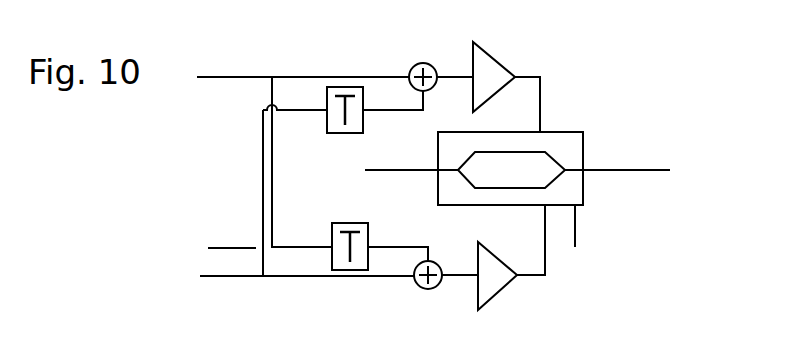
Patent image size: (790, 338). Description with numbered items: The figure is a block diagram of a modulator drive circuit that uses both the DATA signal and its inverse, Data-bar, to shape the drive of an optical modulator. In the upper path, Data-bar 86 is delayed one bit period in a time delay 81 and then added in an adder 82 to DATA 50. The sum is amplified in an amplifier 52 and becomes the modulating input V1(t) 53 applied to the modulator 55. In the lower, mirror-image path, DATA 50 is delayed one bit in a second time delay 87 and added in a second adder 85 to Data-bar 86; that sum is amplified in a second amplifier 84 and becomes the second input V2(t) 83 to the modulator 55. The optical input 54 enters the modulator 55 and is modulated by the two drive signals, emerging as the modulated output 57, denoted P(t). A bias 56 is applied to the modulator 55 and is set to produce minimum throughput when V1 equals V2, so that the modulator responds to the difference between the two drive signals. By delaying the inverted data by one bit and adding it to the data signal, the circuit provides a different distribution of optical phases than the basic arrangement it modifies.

The DATA 50 is at (246, 80).
The time delay 81 is at (327, 127).
The adder 82 is at (411, 68).
The amplifier 52 is at (500, 68).
The modulating input V1(t) 53 is at (538, 92).
The modulator 55 is at (438, 152).
The optical input 54 is at (407, 178).
The modulated output 57 is at (607, 176).
The bias 56 is at (613, 237).
The second input V2(t) 83 is at (545, 222).
The amplifier 84 is at (509, 265).
The adder 85 is at (437, 287).
The Data-bar 86 is at (250, 281).
The time delay 87 is at (332, 233).